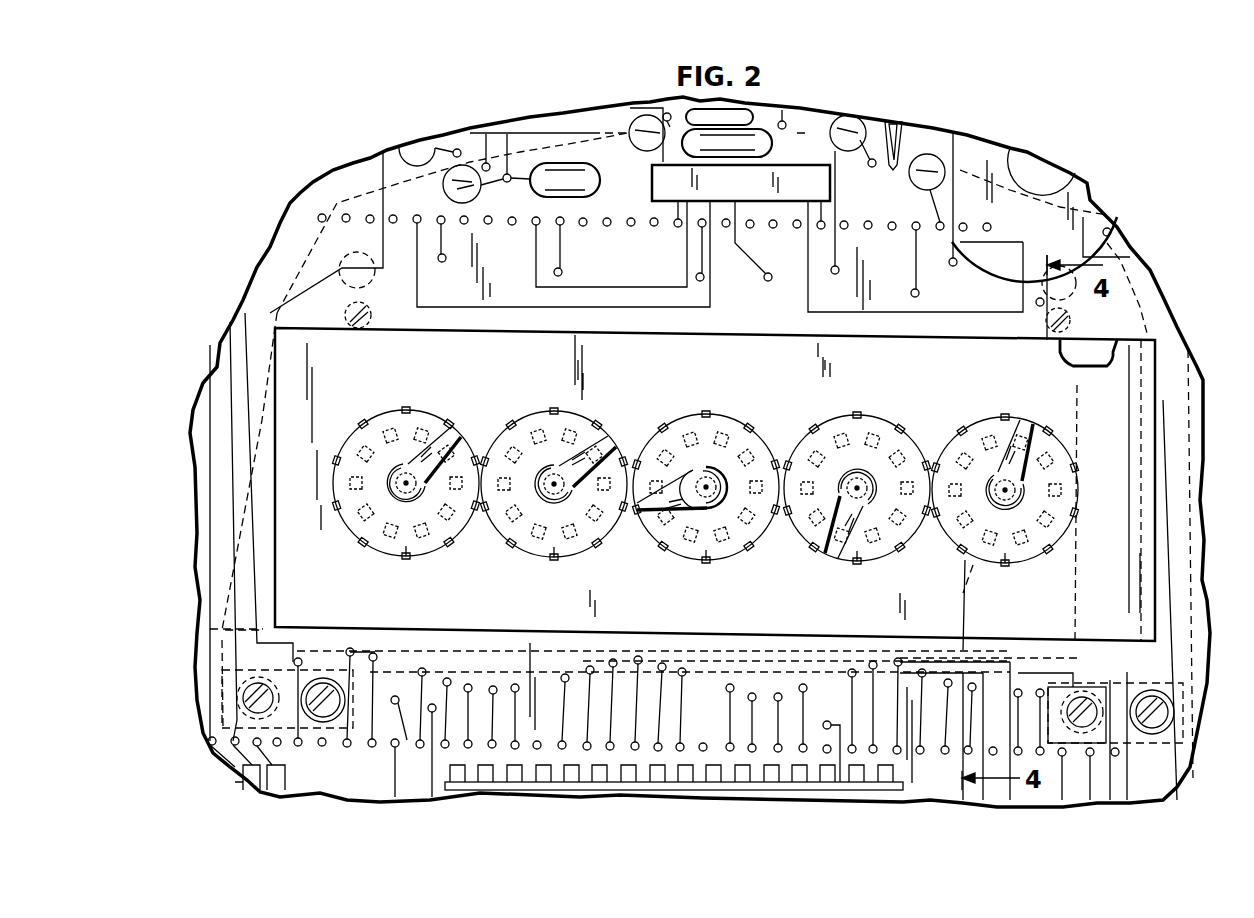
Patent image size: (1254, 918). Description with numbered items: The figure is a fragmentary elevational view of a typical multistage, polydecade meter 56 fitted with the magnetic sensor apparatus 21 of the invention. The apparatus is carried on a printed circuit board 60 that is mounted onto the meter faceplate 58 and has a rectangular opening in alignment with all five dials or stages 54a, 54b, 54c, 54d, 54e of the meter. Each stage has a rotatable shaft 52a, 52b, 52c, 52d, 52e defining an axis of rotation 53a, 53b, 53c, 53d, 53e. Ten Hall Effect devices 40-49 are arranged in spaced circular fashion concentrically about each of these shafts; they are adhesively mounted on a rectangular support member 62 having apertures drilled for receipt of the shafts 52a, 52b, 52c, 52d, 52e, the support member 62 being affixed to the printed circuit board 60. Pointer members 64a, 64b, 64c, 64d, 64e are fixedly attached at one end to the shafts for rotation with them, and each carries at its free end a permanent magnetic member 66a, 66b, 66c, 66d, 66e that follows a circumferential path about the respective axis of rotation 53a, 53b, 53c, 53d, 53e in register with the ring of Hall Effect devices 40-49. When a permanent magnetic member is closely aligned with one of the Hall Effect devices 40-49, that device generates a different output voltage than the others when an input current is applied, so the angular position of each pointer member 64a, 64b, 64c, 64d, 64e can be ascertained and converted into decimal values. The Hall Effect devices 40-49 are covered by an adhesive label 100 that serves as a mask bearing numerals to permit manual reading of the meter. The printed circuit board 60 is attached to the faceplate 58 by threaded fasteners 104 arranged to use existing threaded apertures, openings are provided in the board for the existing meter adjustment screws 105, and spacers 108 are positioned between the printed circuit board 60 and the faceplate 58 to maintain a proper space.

The magnetic sensor apparatus 21 is at (1200, 348).
The multistage polydecade meter 56 is at (1147, 268).
The meter faceplate 58 is at (1133, 300).
The printed circuit board 60 is at (280, 262).
The rectangular support member 62 is at (1087, 353).
The adhesive label 100 is at (743, 357).
The threaded fasteners 104 is at (262, 682).
The meter adjustment screws 105 is at (327, 717).
The spacers 108 is at (222, 678).
The Hall Effect devices 40-49 is at (873, 415).
The rotatable shaft 52a is at (423, 545).
The rotatable shaft 52b is at (573, 547).
The rotatable shaft 52c is at (715, 510).
The rotatable shaft 52d is at (877, 553).
The rotatable shaft 52e is at (1055, 535).
The axis of rotation 53a is at (404, 478).
The axis of rotation 53b is at (548, 480).
The axis of rotation 53c is at (705, 483).
The axis of rotation 53d is at (855, 484).
The axis of rotation 53e is at (1003, 487).
The dial or stage 54a is at (388, 548).
The dial or stage 54b is at (535, 553).
The dial or stage 54c is at (683, 553).
The dial or stage 54d is at (812, 533).
The dial or stage 54e is at (1027, 553).
The pointer member 64a is at (455, 450).
The pointer member 64b is at (622, 447).
The pointer member 64c is at (712, 477).
The pointer member 64d is at (861, 478).
The pointer member 64e is at (1032, 427).
The permanent magnetic member 66a is at (427, 443).
The permanent magnetic member 66b is at (590, 440).
The permanent magnetic member 66c is at (668, 514).
The permanent magnetic member 66d is at (850, 557).
The permanent magnetic member 66e is at (1043, 445).